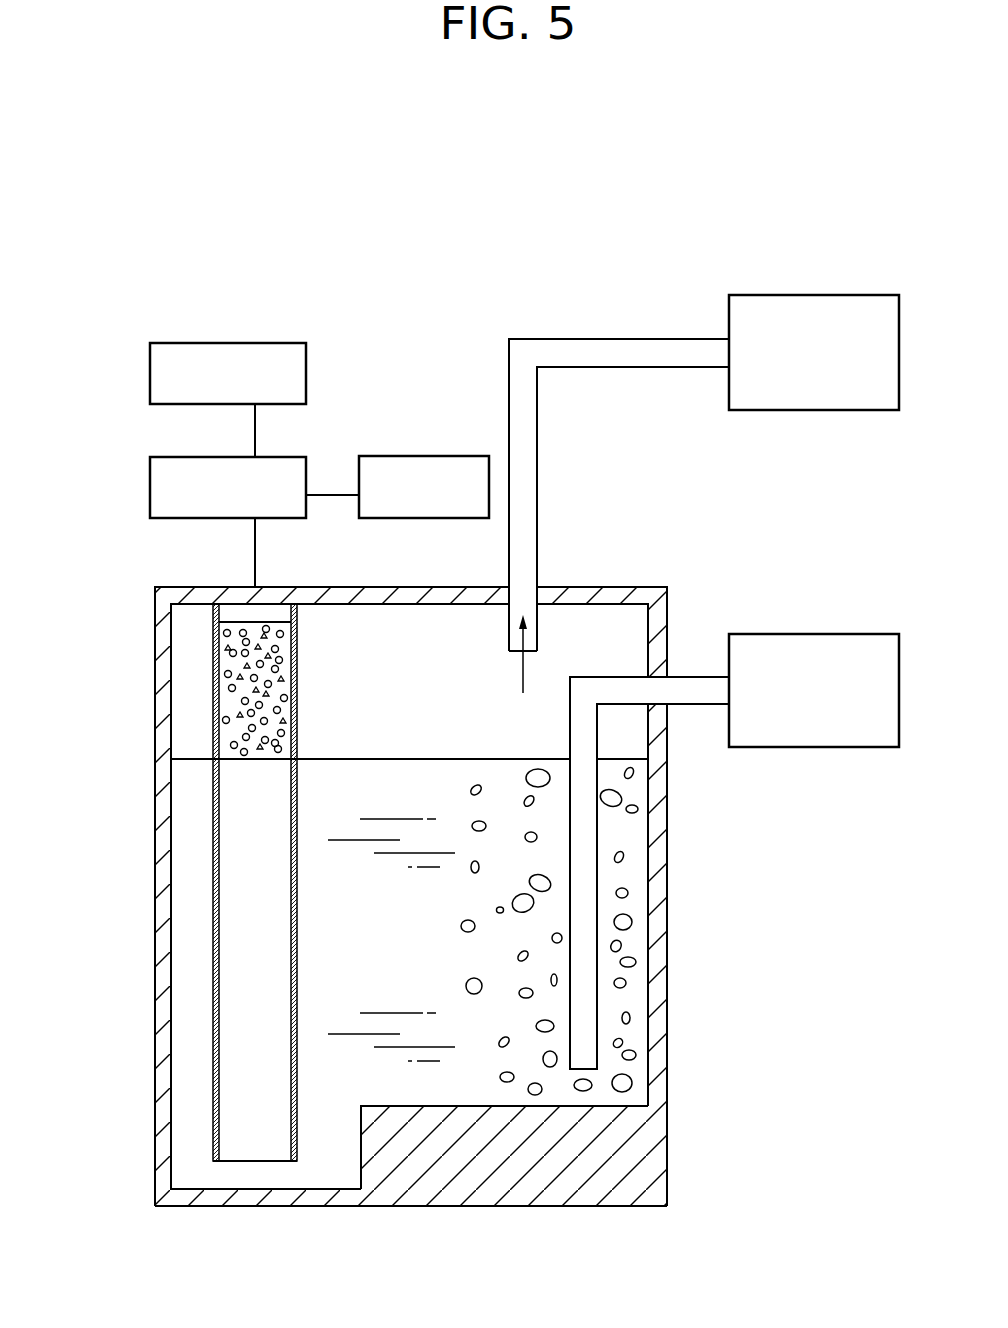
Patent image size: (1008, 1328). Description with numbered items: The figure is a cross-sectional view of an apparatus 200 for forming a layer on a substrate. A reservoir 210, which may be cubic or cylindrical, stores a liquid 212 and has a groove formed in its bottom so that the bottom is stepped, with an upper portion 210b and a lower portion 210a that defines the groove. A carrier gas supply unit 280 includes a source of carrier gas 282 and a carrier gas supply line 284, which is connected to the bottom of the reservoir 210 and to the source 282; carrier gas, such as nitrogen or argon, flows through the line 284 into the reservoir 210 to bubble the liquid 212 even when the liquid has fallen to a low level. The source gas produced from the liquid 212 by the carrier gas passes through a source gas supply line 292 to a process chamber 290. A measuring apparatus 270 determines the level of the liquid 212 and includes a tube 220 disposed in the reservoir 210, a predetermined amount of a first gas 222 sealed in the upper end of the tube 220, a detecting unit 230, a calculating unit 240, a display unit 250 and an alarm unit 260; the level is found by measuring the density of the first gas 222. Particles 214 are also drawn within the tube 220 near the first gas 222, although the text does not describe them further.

The apparatus for forming a layer on a substrate 200 is at (436, 203).
The reservoir 210 is at (163, 897).
The lower portion 210a is at (307, 1207).
The upper portion 210b is at (453, 1106).
The liquid 212 is at (635, 997).
The second particles 214 is at (228, 707).
The tube 220 is at (213, 817).
The first gas 222 is at (232, 688).
The detecting unit 230 is at (225, 614).
The calculating unit 240 is at (150, 493).
The display unit 250 is at (150, 380).
The alarm unit 260 is at (430, 456).
The measuring apparatus 270 is at (198, 647).
The carrier gas supply unit 280 is at (799, 617).
The source of carrier gas 282 is at (813, 747).
The carrier gas supply line 284 is at (696, 704).
The process chamber 290 is at (813, 410).
The source gas supply line 292 is at (632, 367).